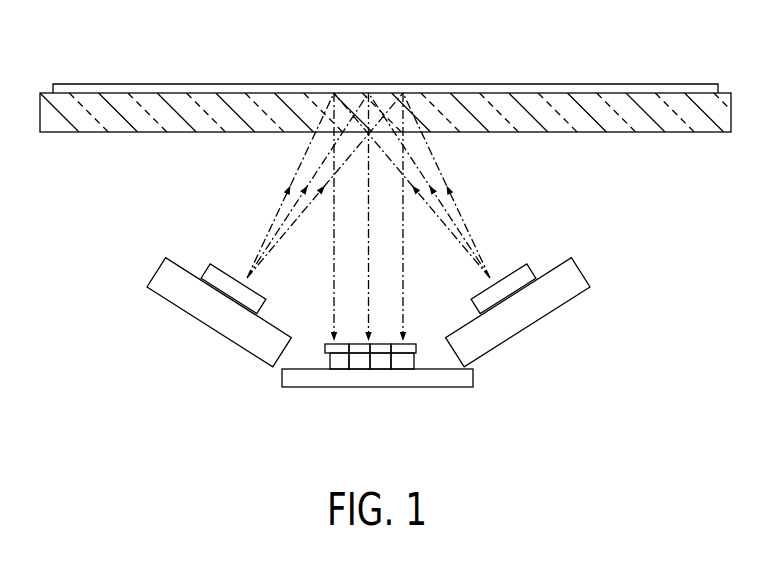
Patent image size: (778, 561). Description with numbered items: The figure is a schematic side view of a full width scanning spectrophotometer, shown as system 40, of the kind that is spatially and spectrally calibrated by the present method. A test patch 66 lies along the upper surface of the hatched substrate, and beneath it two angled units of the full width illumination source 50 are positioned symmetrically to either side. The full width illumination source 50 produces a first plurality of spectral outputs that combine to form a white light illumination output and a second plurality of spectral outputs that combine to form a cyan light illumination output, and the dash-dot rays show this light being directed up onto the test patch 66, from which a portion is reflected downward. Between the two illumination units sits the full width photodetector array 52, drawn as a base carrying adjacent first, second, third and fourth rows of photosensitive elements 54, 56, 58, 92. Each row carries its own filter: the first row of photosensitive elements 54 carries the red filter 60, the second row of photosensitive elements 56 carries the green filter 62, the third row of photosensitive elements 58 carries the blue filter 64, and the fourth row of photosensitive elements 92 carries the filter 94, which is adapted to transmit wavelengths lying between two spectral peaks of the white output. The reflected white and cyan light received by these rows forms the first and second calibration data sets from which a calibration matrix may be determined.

The system 40 is at (113, 68).
The test patch 66 is at (668, 84).
The full width illumination source 50 is at (152, 314).
The full width photodetector array 52 is at (440, 402).
The red filter 60 is at (330, 347).
The green filter 62 is at (360, 347).
The blue filter 64 is at (380, 347).
The filter 94 is at (405, 347).
The first row of photosensitive elements 54 is at (337, 364).
The second row of photosensitive elements 56 is at (362, 364).
The third row of photosensitive elements 58 is at (383, 364).
The fourth row of photosensitive elements 92 is at (408, 364).